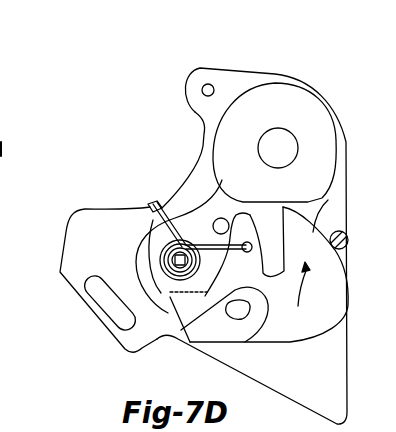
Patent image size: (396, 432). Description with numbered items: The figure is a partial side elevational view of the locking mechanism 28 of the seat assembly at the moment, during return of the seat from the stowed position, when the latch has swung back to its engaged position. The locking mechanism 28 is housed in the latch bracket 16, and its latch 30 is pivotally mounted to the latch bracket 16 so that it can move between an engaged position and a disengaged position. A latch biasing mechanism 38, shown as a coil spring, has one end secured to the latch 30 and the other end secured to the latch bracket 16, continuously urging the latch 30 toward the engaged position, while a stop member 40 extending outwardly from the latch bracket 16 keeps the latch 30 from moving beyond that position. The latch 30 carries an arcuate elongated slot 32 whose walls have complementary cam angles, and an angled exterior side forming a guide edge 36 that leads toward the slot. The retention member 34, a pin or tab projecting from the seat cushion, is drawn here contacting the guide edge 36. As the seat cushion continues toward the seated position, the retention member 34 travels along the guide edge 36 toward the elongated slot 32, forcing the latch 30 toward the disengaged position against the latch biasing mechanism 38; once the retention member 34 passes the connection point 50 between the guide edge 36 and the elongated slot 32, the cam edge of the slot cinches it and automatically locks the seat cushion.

The locking mechanism 28 is at (111, 148).
The latch bracket 16 is at (262, 72).
The latch biasing mechanism 38 is at (151, 203).
The stop member 40 is at (218, 218).
The latch 30 is at (337, 298).
The elongated slot 32 is at (279, 233).
The guide edge 36 is at (328, 200).
The retention member 34 is at (348, 245).
The connection point 50 is at (283, 207).